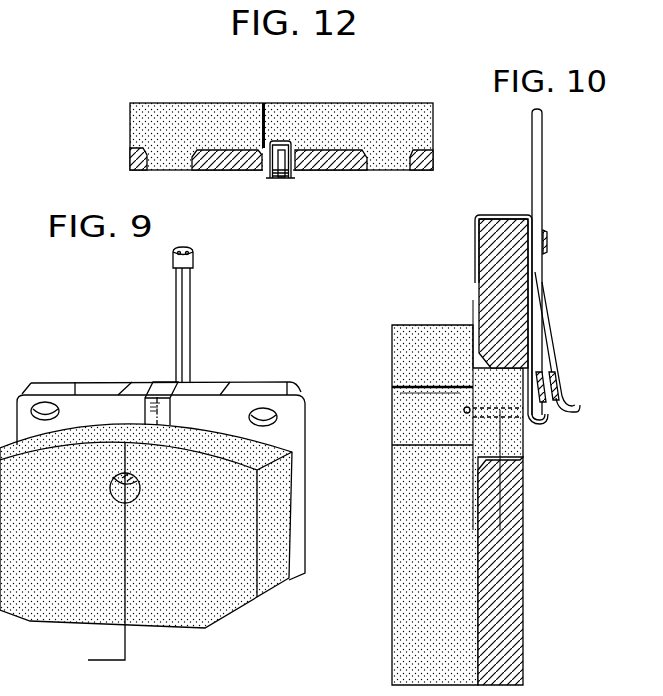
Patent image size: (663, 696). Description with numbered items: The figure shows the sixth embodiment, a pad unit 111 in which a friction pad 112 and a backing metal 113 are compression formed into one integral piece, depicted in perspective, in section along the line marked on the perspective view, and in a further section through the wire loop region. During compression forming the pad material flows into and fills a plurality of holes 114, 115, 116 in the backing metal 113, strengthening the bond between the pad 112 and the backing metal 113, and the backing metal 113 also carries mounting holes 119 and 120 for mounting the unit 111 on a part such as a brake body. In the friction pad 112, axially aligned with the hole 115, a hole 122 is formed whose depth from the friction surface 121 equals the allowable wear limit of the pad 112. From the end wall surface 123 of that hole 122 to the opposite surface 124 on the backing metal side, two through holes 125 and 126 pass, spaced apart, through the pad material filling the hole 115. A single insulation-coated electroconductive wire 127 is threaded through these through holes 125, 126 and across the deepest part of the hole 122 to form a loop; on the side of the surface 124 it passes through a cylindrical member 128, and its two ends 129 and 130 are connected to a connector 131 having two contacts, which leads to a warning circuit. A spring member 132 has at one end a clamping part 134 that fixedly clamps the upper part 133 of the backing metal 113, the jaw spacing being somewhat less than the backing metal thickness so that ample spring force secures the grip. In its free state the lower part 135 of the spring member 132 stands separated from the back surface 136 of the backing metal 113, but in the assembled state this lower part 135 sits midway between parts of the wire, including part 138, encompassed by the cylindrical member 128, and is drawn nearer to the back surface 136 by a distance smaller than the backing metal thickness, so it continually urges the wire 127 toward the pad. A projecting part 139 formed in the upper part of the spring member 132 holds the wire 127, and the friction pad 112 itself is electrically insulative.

In FIG. 9, the pad unit 111 is at (284, 592).
In FIG. 12, the friction pad 112 is at (426, 126).
In FIG. 9, the friction pad 112 is at (213, 625).
In FIG. 12, the backing metal 113 is at (428, 160).
In FIG. 9, the backing metal 113 is at (300, 432).
In FIG. 12, the hole 114 is at (370, 168).
In FIG. 12, the hole 115 is at (303, 172).
In FIG. 10, the hole 115 is at (462, 517).
In FIG. 12, the hole 116 is at (188, 168).
In FIG. 9, the mounting hole 119 is at (42, 404).
In FIG. 9, the mounting hole 120 is at (270, 412).
In FIG. 12, the friction surface 121 is at (376, 97).
In FIG. 10, the friction surface 121 is at (395, 352).
In FIG. 12, the hole 122 is at (286, 142).
In FIG. 10, the hole 122 is at (395, 389).
In FIG. 9, the hole 122 is at (118, 492).
In FIG. 12, the end wall surface 123 is at (265, 147).
In FIG. 10, the end wall surface 123 is at (470, 440).
In FIG. 10, the opposite surface 124 is at (524, 471).
In FIG. 12, the through hole 125 is at (292, 150).
In FIG. 12, the through hole 126 is at (264, 152).
In FIG. 12, the electroconductive wire 127 is at (280, 141).
In FIG. 10, the electroconductive wire 127 is at (538, 193).
In FIG. 9, the electroconductive wire 127 is at (190, 335).
In FIG. 10, the cylindrical member 128 is at (553, 368).
In FIG. 9, the end of wire 129 is at (189, 285).
In FIG. 9, the end of wire 130 is at (177, 278).
In FIG. 9, the connector 131 is at (191, 260).
In FIG. 10, the spring member 132 is at (476, 219).
In FIG. 10, the upper part of backing metal 133 is at (504, 224).
In FIG. 9, the upper part of backing metal 133 is at (247, 388).
In FIG. 10, the clamping part 134 is at (476, 262).
In FIG. 9, the clamping part 134 is at (165, 410).
In FIG. 10, the lower part of spring member 135 is at (546, 384).
In FIG. 10, the back surface 136 is at (523, 620).
In FIG. 10, the part of wire 138 is at (570, 420).
In FIG. 10, the projecting part 139 is at (572, 238).